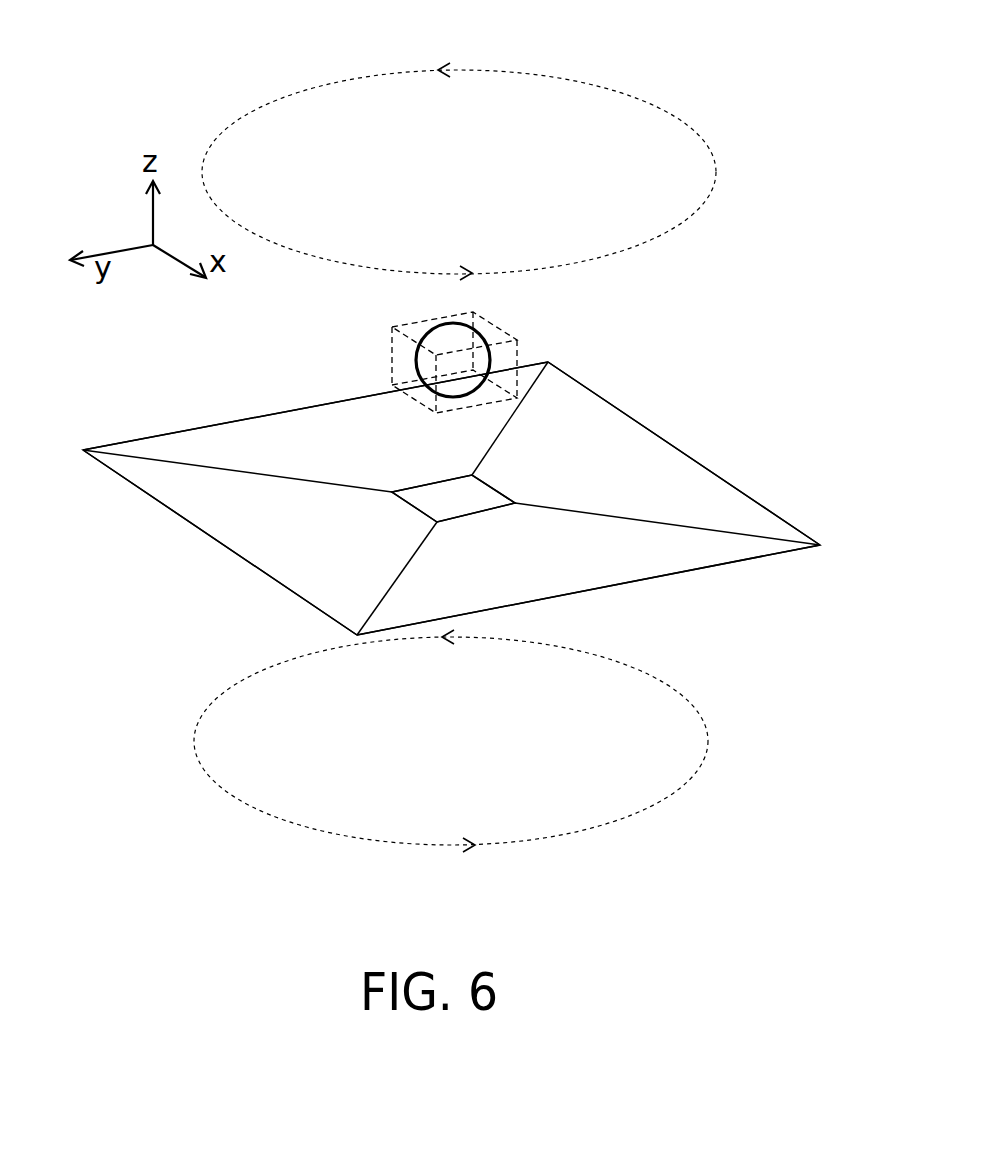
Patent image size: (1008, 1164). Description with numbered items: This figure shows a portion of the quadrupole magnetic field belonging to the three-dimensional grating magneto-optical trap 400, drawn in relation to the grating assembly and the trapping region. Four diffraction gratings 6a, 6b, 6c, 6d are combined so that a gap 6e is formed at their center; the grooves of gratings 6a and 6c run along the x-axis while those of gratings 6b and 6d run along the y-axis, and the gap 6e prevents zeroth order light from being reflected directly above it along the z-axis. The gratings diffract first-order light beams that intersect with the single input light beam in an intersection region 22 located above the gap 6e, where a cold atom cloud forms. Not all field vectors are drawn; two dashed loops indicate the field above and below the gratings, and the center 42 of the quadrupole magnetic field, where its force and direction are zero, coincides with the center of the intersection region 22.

The 3D GMOT 400 is at (746, 120).
The intersection region 22 is at (390, 358).
The center of the quadrupole magnetic field 42 is at (490, 348).
The diffraction grating 6a is at (300, 598).
The diffraction grating 6b is at (647, 578).
The diffraction grating 6c is at (707, 467).
The diffraction grating 6d is at (193, 428).
The gap 6e is at (500, 495).